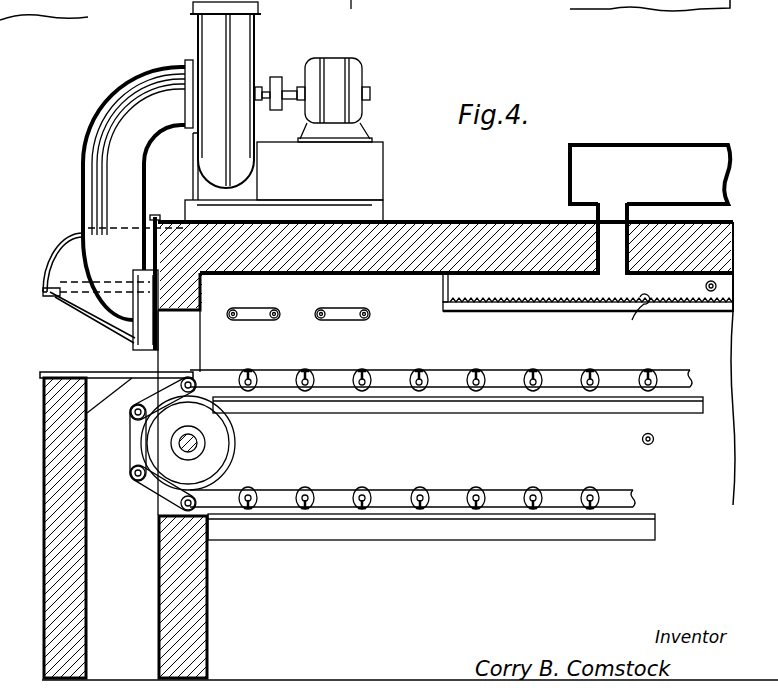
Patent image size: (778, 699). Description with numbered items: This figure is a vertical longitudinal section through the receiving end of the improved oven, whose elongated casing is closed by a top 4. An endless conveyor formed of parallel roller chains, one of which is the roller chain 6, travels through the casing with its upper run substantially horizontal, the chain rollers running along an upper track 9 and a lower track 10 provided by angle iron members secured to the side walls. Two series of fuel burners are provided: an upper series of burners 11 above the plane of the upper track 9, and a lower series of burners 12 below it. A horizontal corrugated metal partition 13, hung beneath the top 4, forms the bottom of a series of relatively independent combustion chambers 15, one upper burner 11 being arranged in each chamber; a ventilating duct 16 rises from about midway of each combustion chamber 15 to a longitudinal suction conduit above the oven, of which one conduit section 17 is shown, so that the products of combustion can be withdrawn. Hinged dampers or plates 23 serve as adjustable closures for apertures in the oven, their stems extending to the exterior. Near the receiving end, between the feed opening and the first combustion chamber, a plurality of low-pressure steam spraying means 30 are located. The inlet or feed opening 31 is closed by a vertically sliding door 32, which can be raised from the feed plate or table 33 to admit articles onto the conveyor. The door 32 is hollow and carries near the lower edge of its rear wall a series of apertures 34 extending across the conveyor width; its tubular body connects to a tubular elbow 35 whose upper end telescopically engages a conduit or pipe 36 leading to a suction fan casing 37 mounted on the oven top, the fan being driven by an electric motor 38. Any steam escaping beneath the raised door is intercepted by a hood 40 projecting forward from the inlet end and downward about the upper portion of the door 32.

The top 4 is at (348, 13).
The suction fan casing 37 is at (256, 48).
The electric motor 38 is at (350, 64).
The conduit or pipe 36 is at (84, 140).
The tubular elbow 35 is at (78, 262).
The hood 40 is at (47, 272).
The feed plate or table 33 is at (96, 371).
The vertically sliding door 32 is at (133, 338).
The apertures 34 is at (158, 345).
The inlet or feed opening 31 is at (174, 412).
The low-pressure steam spraying means 30 is at (340, 310).
The hinged dampers or plates 23 is at (448, 311).
The combustion chambers 15 is at (591, 289).
The horizontal metal partition 13 is at (632, 320).
The upper series of fuel burners 11 is at (705, 286).
The ventilating duct 16 is at (608, 218).
The conduit section 17 is at (655, 158).
The roller chain 6 is at (453, 381).
The upper track 9 is at (520, 407).
The lower track 10 is at (478, 526).
The lower series of fuel burners 12 is at (654, 440).